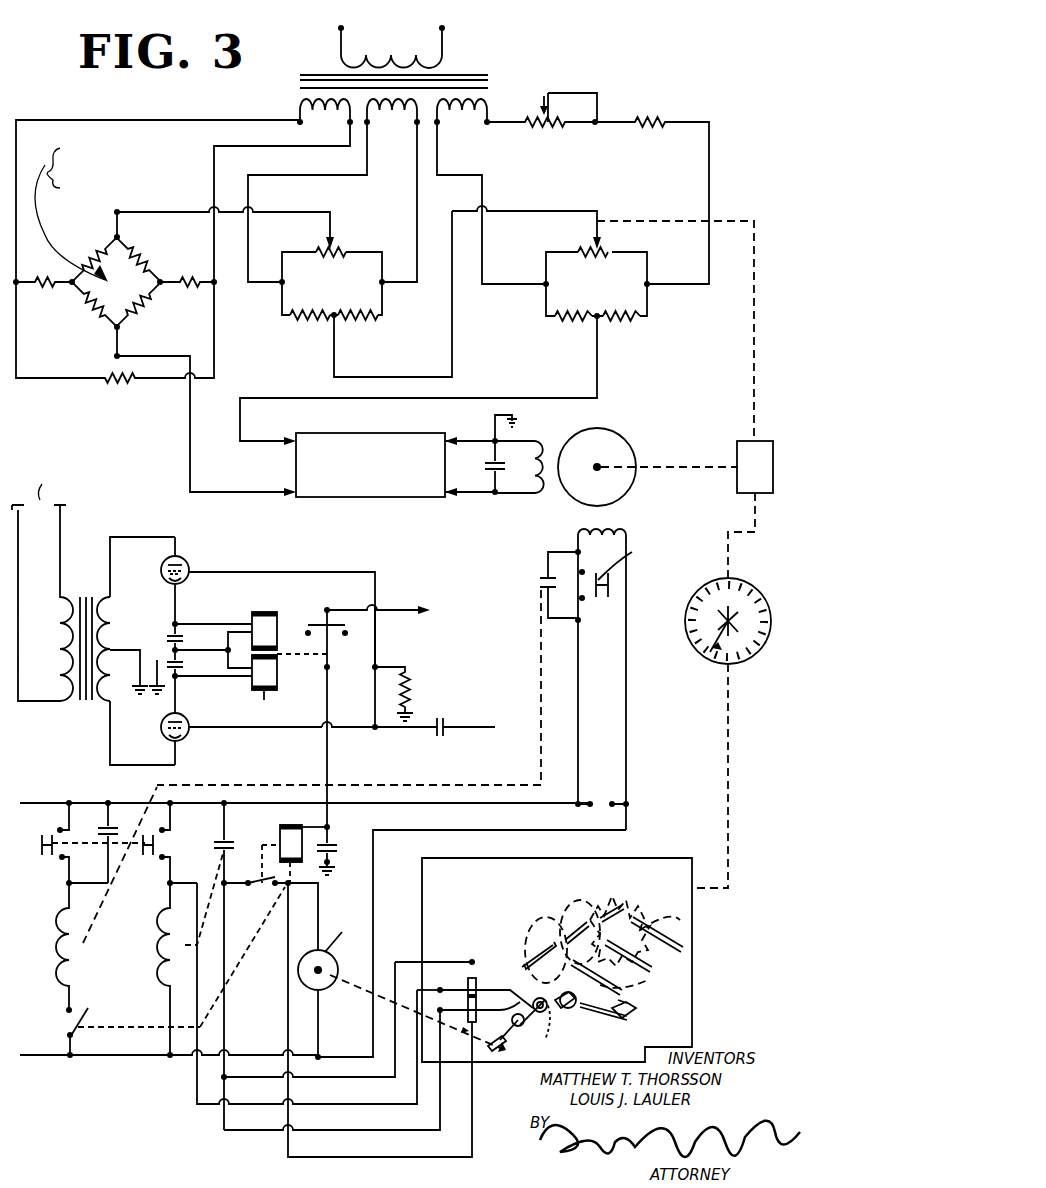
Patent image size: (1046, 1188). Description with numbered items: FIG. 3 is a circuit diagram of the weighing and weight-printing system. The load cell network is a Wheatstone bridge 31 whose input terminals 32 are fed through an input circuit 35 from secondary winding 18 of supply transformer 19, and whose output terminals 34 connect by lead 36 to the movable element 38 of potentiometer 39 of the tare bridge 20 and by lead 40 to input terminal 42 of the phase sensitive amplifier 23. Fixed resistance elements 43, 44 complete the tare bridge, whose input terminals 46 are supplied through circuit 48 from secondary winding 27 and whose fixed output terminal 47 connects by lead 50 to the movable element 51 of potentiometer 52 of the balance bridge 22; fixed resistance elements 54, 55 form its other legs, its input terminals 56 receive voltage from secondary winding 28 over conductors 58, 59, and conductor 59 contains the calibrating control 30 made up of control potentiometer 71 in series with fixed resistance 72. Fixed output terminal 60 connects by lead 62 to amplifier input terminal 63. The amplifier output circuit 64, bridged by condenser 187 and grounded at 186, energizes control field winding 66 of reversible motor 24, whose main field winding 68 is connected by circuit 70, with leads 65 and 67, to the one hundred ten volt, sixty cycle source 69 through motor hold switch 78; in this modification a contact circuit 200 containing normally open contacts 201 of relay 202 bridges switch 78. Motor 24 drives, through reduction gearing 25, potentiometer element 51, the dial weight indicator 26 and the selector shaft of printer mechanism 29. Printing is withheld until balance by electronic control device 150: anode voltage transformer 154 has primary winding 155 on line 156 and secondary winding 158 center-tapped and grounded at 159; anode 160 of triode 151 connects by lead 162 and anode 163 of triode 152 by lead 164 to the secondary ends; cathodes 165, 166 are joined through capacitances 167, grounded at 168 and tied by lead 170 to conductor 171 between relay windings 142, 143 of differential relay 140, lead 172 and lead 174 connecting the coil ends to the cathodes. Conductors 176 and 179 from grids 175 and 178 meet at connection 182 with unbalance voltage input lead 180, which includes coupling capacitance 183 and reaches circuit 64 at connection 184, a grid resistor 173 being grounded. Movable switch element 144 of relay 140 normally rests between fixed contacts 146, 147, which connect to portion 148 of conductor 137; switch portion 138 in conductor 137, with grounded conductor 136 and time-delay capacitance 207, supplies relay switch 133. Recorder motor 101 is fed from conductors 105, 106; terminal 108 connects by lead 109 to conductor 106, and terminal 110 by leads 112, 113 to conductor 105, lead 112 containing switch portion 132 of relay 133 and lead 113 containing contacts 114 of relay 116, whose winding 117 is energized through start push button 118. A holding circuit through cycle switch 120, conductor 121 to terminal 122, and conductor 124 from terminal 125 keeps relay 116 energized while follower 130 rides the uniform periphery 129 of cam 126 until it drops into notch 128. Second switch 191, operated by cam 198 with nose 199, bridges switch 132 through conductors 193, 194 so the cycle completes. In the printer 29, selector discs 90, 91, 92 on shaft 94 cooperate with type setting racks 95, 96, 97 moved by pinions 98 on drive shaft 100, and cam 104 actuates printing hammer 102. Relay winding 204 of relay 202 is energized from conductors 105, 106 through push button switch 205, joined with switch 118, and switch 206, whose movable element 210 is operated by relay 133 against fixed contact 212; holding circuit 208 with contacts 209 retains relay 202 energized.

The transformer 19 is at (451, 74).
The secondary winding 18 is at (320, 112).
The secondary winding 27 is at (387, 112).
The secondary winding 28 is at (457, 112).
The conductor 35 is at (188, 136).
The conductor 36 is at (262, 212).
The slider 38 is at (333, 235).
The potentiometer 39 is at (340, 248).
The tare bridge 20 is at (376, 254).
The resistor 43 is at (302, 322).
The resistor 44 is at (366, 320).
The junction 47 is at (336, 318).
The terminal 46 is at (274, 284).
The conductor 48 is at (412, 156).
The conductor 50 is at (454, 356).
The conductor 58 is at (442, 158).
The slider 52 is at (600, 246).
The potentiometer 51 is at (586, 240).
The balance bridge 22 is at (647, 260).
The resistor 54 is at (574, 322).
The resistor 55 is at (634, 324).
The junction 60 is at (602, 318).
The terminal 56 is at (544, 284).
The conductor 62 is at (296, 392).
The input lead 63 is at (276, 436).
The resistor 71 is at (548, 136).
The calibrating unit 30 is at (644, 99).
The resistor 72 is at (651, 136).
The conductor 59 is at (710, 186).
The load cell network 31 is at (66, 339).
The junction 34 is at (122, 215).
The resistor 32 is at (21, 282).
The conductor 40 is at (180, 458).
The input lead 42 is at (283, 486).
The phase sensitive amplifier 23 is at (330, 432).
The output leads 64 is at (476, 478).
The capacitor 187 is at (497, 464).
The output lead 184 is at (494, 498).
The ground 186 is at (514, 416).
The motor field coil 66 is at (552, 500).
The motor 24 is at (621, 438).
The gear train 25 is at (738, 438).
The indicator dial 26 is at (738, 580).
The relay coil 68 is at (625, 526).
The conductor 67 is at (624, 686).
The junction 200 is at (523, 552).
The capacitor 201 is at (534, 580).
The relay contacts 78 is at (614, 582).
The conductor 65 is at (578, 654).
The power lines 70 is at (612, 718).
The plug 69 is at (602, 812).
The conductor 106 is at (504, 830).
The conductor 105 is at (382, 812).
The transformer 150 is at (190, 531).
The primary winding 155 is at (64, 654).
The power lead 156 is at (20, 533).
The secondary winding 154 is at (102, 588).
The conductor 162 is at (144, 532).
The conductor 158 is at (102, 714).
The conductor 164 is at (154, 754).
The center tap 159 is at (138, 662).
The ground 168 is at (156, 682).
The rectifier tube 151 is at (160, 566).
The anode 160 is at (182, 558).
The cathode 175 is at (187, 572).
The heater 165 is at (166, 582).
The rectifier tube 152 is at (160, 724).
The anode 166 is at (186, 720).
The cathode 178 is at (190, 738).
The heater 163 is at (186, 752).
The conductor 172 is at (186, 624).
The conductor 170 is at (218, 648).
The conductor 174 is at (192, 680).
The capacitor 167 is at (164, 638).
The capacitor 171 is at (214, 668).
The conductor 176 is at (252, 572).
The conductor 179 is at (252, 740).
The conductor 182 is at (354, 732).
The conductor 180 is at (404, 734).
The capacitor 183 is at (440, 720).
The resistor 173 is at (410, 676).
The output conductor 137 is at (327, 778).
The armature contact 148 is at (327, 602).
The contact 146 is at (288, 625).
The contact 147 is at (338, 636).
The armature link 144 is at (320, 664).
The relay coil 142 is at (252, 608).
The relay coil 140 is at (308, 693).
The relay 143 is at (262, 702).
The relay 138 is at (361, 693).
The relay contacts 205 is at (50, 832).
The link 208 is at (96, 884).
The capacitor 209 is at (94, 833).
The relay contacts 118 is at (157, 868).
The relay coil 204 is at (56, 930).
The relay 202 is at (40, 955).
The contact 212 is at (62, 1012).
The switch blade 210 is at (80, 1032).
The switch 206 is at (44, 1043).
The conductor 121 is at (197, 1084).
The relay coil 117 is at (158, 928).
The relay 116 is at (142, 961).
The capacitor 114 is at (220, 836).
The junction 113 is at (226, 862).
The switch contacts 132 is at (266, 886).
The relay coil 133 is at (274, 826).
The relay link 112 is at (290, 884).
The capacitor 207 is at (334, 832).
The ground 136 is at (336, 870).
The motor 101 is at (338, 950).
The motor shaft 110 is at (334, 930).
The drive connection 108 is at (312, 992).
The conductor 109 is at (326, 1024).
The conductor 124 is at (242, 1080).
The conductor 193 is at (242, 1096).
The conductor 194 is at (426, 1152).
The conductor 125 is at (434, 950).
The terminal 120 is at (422, 977).
The terminal 122 is at (442, 994).
The resistor 130 is at (526, 983).
The printing mechanism 29 is at (466, 896).
The cam 92 is at (524, 926).
The cam 91 is at (560, 900).
The cam 90 is at (587, 877).
The cam follower 94 is at (630, 886).
The shaft 95 is at (644, 918).
The shaft 96 is at (620, 948).
The shaft 97 is at (594, 968).
The cam 98 is at (648, 978).
The linkage 100 is at (690, 932).
The bar 104 is at (630, 1008).
The bearing 102 is at (632, 1024).
The pawl 129 is at (564, 1016).
The roller 126 is at (572, 1030).
The spring 128 is at (559, 1030).
The pointer 199 is at (528, 1004).
The lever 191 is at (498, 1008).
The arm 198 is at (513, 1048).